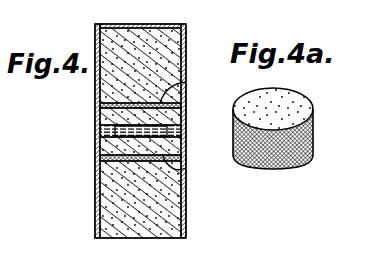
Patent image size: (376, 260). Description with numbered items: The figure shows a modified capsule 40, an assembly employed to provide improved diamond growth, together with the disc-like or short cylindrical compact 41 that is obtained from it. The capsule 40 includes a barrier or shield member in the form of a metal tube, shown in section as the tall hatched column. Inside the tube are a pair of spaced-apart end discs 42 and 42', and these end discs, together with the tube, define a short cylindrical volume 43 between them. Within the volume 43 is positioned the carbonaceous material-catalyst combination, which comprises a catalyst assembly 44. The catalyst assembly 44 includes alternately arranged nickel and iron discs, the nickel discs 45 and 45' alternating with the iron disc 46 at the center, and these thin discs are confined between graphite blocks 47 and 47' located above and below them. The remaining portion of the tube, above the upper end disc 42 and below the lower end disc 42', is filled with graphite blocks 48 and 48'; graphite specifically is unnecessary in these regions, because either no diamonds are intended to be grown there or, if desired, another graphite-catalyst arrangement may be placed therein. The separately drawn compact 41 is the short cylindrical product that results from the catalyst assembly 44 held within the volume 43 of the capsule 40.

In FIG. 4, the capsule 40 is at (189, 201).
In FIG. 4A, the short cylindrical compact 41 is at (273, 169).
In FIG. 4, the end disc 42 is at (165, 65).
In FIG. 4, the end disc 42' is at (168, 196).
In FIG. 4, the short cylindrical volume 43 is at (167, 133).
In FIG. 4, the catalyst assembly 44 is at (224, 116).
In FIG. 4, the nickel disc 45 is at (114, 111).
In FIG. 4, the lower filter layer 45' is at (108, 149).
In FIG. 4, the iron disc 46 is at (115, 131).
In FIG. 4, the graphite block 47 is at (118, 94).
In FIG. 4, the graphite block 47' is at (113, 172).
In FIG. 4, the graphite block 48 is at (115, 58).
In FIG. 4, the graphite block 48' is at (112, 203).